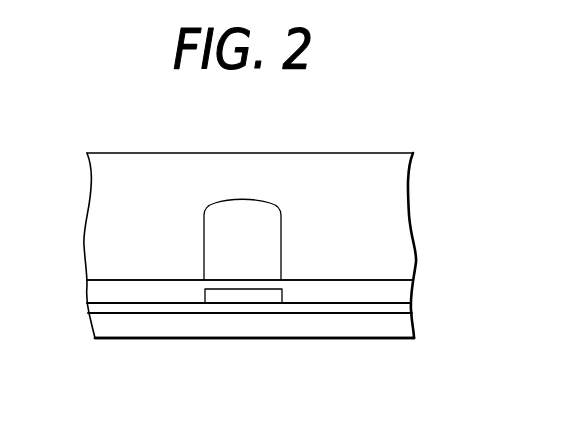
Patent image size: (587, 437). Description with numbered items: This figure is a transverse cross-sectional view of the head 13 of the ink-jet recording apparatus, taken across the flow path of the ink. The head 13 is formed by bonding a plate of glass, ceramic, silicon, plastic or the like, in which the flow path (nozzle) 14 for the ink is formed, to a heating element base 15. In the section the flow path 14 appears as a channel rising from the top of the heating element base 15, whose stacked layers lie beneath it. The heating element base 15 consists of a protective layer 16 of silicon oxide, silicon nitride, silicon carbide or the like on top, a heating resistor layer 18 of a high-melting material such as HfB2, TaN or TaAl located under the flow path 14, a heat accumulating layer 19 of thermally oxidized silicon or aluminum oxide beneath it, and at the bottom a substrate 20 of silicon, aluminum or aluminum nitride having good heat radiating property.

The head 13 is at (108, 153).
The flow path (nozzle) 14 is at (247, 198).
The heating element base 15 is at (448, 277).
The protective layer 16 is at (293, 287).
The heating resistor layer 18 is at (268, 300).
The heat accumulating layer 19 is at (320, 310).
The substrate 20 is at (387, 338).